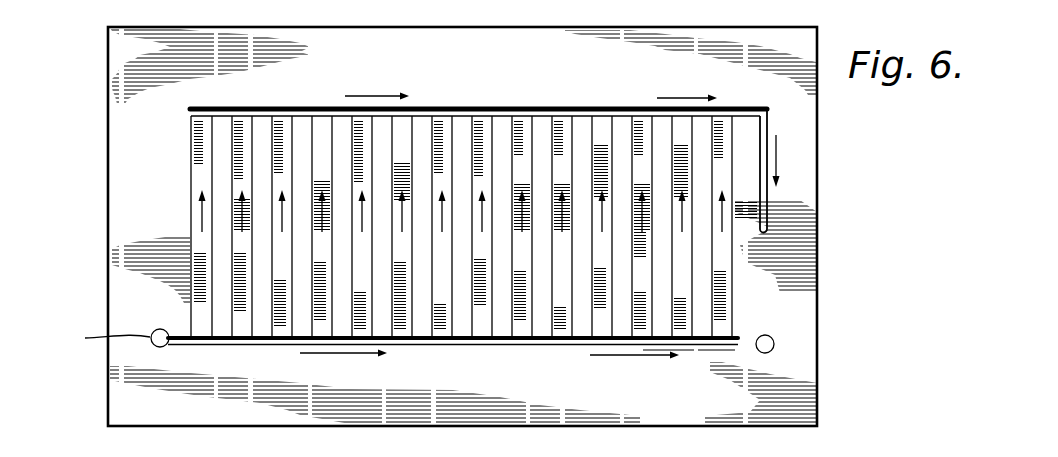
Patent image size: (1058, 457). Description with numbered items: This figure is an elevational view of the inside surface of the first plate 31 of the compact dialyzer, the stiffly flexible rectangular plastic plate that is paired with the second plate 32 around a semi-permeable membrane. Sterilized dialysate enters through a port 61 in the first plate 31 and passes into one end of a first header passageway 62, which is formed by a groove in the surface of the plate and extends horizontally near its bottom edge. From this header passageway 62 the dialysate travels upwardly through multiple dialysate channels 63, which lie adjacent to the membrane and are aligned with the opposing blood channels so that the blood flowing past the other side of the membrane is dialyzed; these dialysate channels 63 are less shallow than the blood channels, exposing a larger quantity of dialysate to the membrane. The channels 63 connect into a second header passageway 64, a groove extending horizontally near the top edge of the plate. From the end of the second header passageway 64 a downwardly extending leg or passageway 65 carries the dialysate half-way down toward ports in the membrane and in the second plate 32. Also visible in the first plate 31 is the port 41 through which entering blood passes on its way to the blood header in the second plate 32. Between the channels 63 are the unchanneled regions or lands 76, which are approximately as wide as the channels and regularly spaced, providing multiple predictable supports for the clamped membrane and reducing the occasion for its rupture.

The first plate 31 is at (812, 201).
The port 41 is at (768, 338).
The port 61 is at (158, 347).
The first header passageway 62 is at (500, 341).
The dialysate channels 63 is at (245, 121).
The second header passageway 64 is at (580, 110).
The downwardly extending leg or passageway 65 is at (762, 130).
The lands 76 is at (464, 122).
The second plate 32 is at (929, 451).